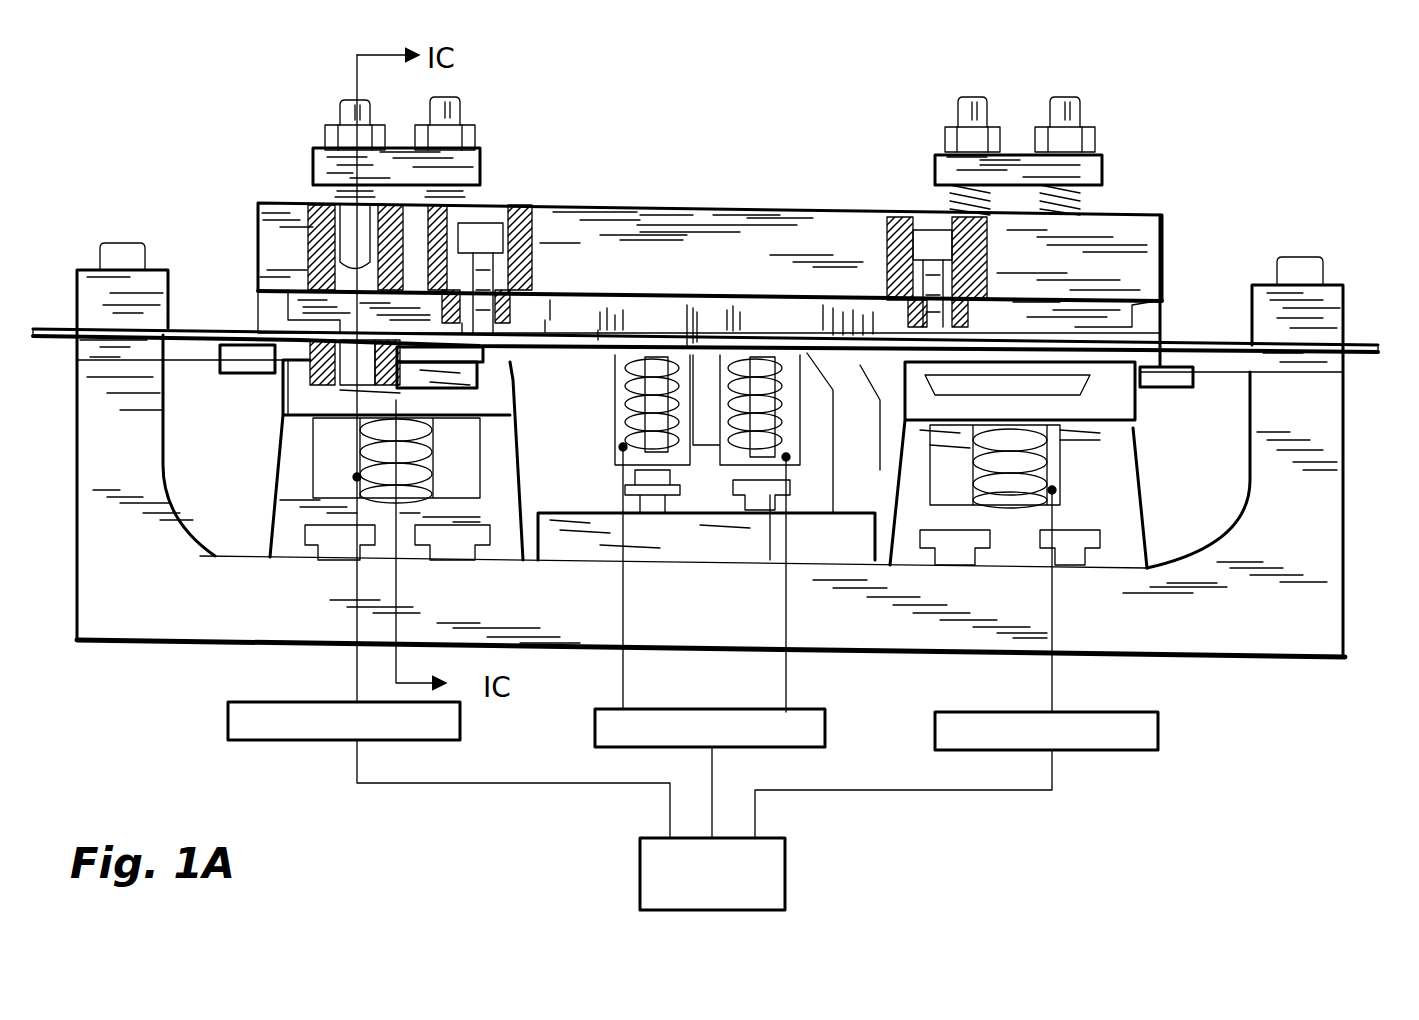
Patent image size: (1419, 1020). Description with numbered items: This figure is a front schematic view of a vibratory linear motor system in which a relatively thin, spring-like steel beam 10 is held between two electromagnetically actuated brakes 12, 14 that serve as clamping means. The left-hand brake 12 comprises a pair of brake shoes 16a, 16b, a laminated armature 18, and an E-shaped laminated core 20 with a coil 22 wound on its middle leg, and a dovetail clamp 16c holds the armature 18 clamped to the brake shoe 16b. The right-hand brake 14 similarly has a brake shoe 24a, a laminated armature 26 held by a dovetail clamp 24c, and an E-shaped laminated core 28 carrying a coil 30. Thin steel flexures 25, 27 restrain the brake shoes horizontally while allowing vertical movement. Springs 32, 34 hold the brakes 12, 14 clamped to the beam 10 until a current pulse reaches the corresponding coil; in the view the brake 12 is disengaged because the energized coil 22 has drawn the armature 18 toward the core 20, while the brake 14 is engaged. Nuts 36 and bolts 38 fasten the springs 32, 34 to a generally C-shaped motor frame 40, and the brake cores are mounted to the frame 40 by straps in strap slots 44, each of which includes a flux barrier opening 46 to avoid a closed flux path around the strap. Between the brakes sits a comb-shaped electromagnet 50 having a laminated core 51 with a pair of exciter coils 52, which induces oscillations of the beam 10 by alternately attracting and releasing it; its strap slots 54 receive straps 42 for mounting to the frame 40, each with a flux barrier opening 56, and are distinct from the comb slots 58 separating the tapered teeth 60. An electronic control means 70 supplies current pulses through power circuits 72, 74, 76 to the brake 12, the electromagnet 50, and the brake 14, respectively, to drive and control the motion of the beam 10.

The beam 10 is at (205, 315).
The electromagnetically actuated brake 12 is at (195, 405).
The electromagnetically actuated brake 14 is at (1218, 430).
The brake shoe 16a is at (530, 305).
The brake shoe 16b is at (485, 365).
The dovetail clamp 16c is at (478, 380).
The laminated armature 18 is at (525, 410).
The laminated core 20 is at (300, 452).
The coil 22 is at (360, 445).
The brake shoe 24a is at (1165, 322).
The dovetail clamp 24c is at (1105, 395).
The flexure 25 is at (198, 360).
The laminated armature 26 is at (905, 398).
The flexure 27 is at (1232, 385).
The laminated core 28 is at (1125, 455).
The coil 30 is at (975, 465).
The spring 32 is at (318, 192).
The spring 34 is at (935, 200).
The nut 36 is at (325, 138).
The bolt 38 is at (465, 110).
The motor frame 40 is at (708, 208).
The strap 42 is at (700, 522).
The strap slot 44 is at (462, 560).
The flux barrier opening 46 is at (332, 555).
The electromagnet 50 is at (580, 530).
The laminated core 51 is at (840, 390).
The exciter coil 52 is at (608, 430).
The strap slot 54 is at (775, 520).
The flux barrier opening 56 is at (752, 505).
The comb slot 58 is at (628, 355).
The tooth 60 is at (740, 330).
The electronic control means 70 is at (790, 865).
The power circuit 72 is at (305, 742).
The power circuit 74 is at (595, 730).
The power circuit 76 is at (1145, 750).